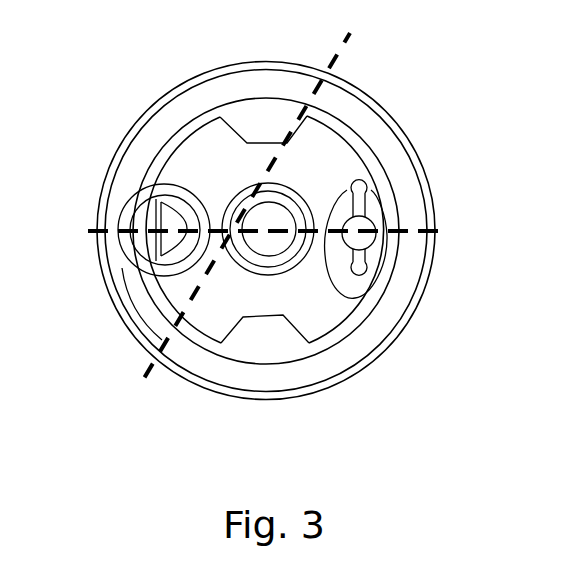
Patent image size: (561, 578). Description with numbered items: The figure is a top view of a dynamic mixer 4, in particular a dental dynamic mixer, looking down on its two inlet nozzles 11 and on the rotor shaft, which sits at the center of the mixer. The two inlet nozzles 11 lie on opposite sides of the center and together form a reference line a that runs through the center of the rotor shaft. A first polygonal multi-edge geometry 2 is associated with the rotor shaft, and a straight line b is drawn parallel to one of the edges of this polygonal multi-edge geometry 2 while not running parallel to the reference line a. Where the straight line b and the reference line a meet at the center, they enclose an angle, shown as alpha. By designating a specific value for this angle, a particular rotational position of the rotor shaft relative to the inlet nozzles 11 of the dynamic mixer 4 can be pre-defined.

The first polygonal multi-edge geometry 2 is at (252, 255).
The dynamic mixer 4 is at (365, 142).
The inlet nozzle 11 is at (108, 235).
The reference line a is at (295, 192).
The straight line running parallel to one of the edges of the polygonal multi-edge g b is at (337, 63).